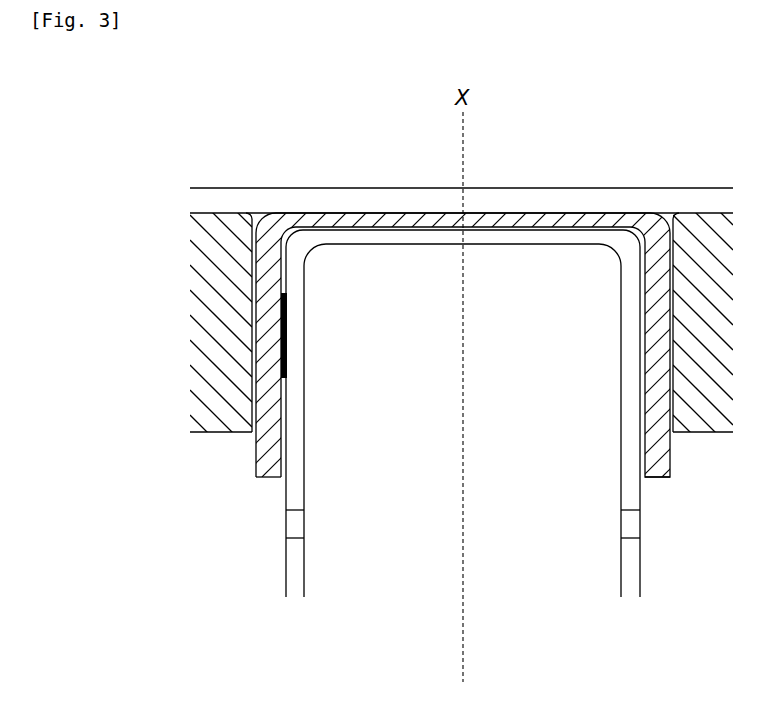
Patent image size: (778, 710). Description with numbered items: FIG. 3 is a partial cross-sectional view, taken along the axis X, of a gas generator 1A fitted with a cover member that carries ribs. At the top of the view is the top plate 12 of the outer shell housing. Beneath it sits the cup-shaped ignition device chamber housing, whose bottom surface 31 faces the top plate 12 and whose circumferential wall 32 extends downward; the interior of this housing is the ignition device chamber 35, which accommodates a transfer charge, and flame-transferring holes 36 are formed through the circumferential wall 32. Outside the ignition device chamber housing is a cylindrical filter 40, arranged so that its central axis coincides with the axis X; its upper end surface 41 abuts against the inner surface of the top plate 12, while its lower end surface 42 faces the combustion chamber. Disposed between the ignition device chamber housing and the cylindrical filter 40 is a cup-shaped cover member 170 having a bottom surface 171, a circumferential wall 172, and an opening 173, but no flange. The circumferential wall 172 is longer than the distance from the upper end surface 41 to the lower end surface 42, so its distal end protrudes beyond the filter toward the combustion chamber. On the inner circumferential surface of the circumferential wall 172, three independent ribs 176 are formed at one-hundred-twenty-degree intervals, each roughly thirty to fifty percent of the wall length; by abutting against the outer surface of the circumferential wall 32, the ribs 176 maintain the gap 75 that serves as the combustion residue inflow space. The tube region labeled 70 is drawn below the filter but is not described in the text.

The gas generator 1A is at (607, 178).
The top plate 12 is at (670, 188).
The bottom surface 31 is at (363, 236).
The circumferential wall 32 is at (620, 440).
The ignition device chamber 35 is at (425, 467).
The flame-transferring holes 36 is at (295, 534).
The cylindrical filter 40 is at (207, 443).
The upper end surface 41 is at (714, 218).
The lower end surface 42 is at (713, 433).
The tube 70 is at (652, 568).
The gap 75 is at (284, 426).
The cup-shaped cover member 170 is at (279, 206).
The bottom surface 171 is at (537, 222).
The circumferential wall 172 is at (258, 272).
The opening 173 is at (285, 480).
The ribs 176 is at (290, 322).